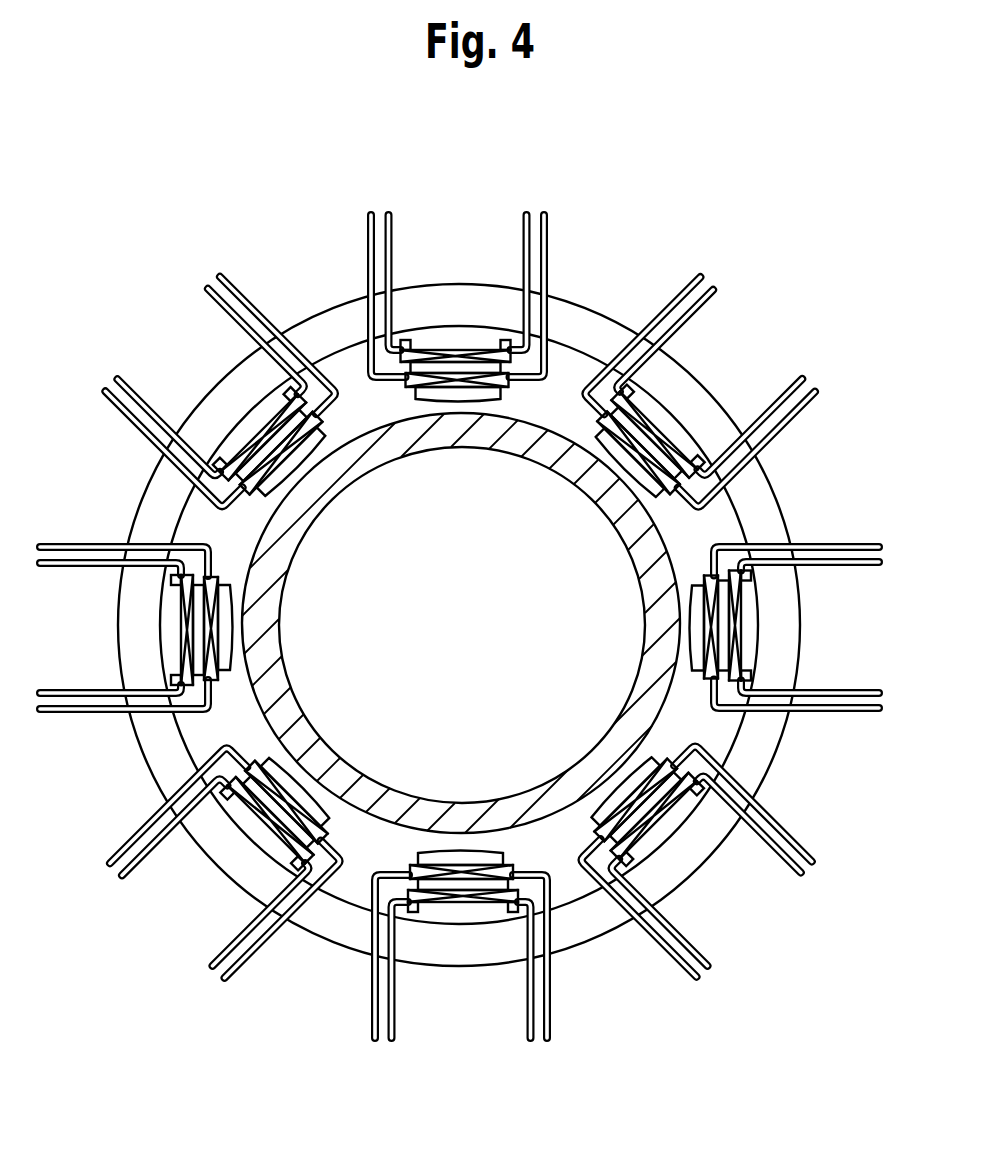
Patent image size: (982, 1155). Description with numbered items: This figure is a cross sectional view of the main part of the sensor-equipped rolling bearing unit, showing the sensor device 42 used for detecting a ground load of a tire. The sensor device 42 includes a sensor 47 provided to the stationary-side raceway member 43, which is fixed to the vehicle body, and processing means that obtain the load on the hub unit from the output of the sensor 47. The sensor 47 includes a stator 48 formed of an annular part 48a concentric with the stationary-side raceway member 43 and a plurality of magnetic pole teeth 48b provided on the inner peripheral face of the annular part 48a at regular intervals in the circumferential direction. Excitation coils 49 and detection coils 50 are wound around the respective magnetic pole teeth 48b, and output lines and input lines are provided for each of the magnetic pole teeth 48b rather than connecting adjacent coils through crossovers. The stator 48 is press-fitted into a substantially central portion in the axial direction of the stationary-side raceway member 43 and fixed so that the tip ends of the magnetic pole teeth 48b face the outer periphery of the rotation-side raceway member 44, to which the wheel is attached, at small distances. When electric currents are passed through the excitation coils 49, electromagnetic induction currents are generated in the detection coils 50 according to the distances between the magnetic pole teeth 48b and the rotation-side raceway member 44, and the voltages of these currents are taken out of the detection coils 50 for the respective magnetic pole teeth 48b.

The sensor device 42 is at (459, 594).
The stationary-side raceway member 43 is at (765, 500).
The rotation-side raceway member 44 is at (655, 682).
The sensor 47 is at (509, 334).
The stator 48 is at (602, 350).
The annular part 48a is at (347, 353).
The magnetic pole teeth 48b is at (457, 391).
The excitation coils 49 is at (428, 350).
The detection coils 50 is at (497, 357).